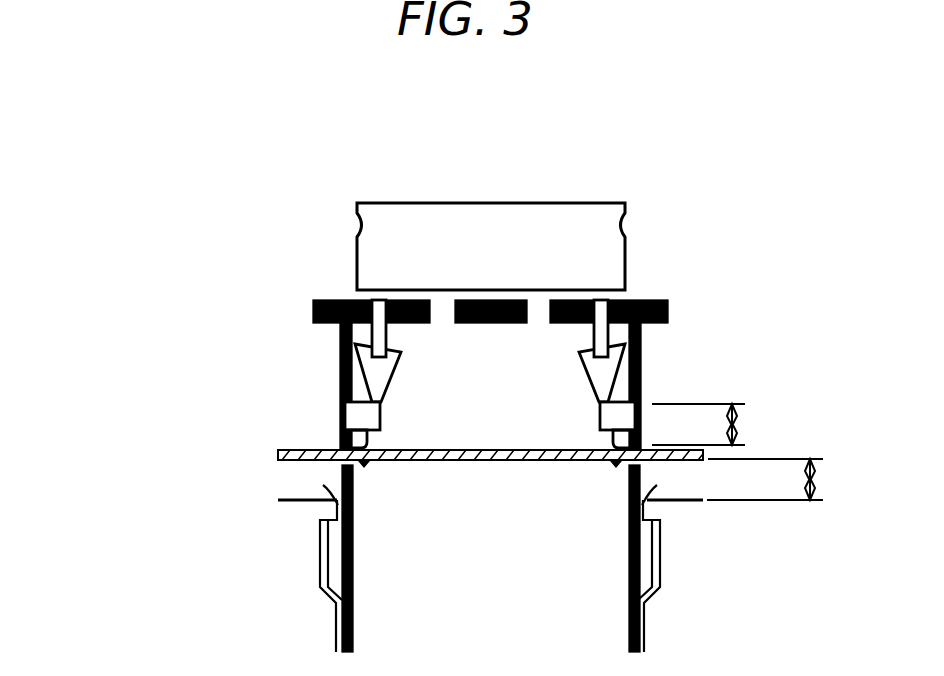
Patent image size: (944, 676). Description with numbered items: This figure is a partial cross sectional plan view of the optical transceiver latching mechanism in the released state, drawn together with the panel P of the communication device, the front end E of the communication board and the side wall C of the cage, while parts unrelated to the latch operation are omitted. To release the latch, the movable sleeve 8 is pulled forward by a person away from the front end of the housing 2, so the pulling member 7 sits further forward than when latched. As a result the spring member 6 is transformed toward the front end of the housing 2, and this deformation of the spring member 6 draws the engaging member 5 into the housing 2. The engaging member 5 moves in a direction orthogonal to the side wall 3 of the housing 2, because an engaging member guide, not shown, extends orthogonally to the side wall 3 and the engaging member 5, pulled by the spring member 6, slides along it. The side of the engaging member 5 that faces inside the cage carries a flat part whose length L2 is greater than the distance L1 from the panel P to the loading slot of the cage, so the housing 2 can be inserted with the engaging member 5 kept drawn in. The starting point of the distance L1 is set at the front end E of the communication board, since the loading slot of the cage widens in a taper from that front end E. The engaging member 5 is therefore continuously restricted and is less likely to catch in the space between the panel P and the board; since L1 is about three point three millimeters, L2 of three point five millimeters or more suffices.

The housing 2 is at (337, 300).
The side wall 3 is at (348, 357).
The engaging member 5 is at (345, 412).
The spring member 6 is at (450, 388).
The pulling member 7 is at (388, 329).
The movable sleeve 8 is at (435, 203).
The panel P is at (538, 463).
The front end of the communication board E is at (688, 503).
The side wall of the cage C is at (647, 623).
The distance L1 is at (785, 479).
The length L2 is at (718, 424).